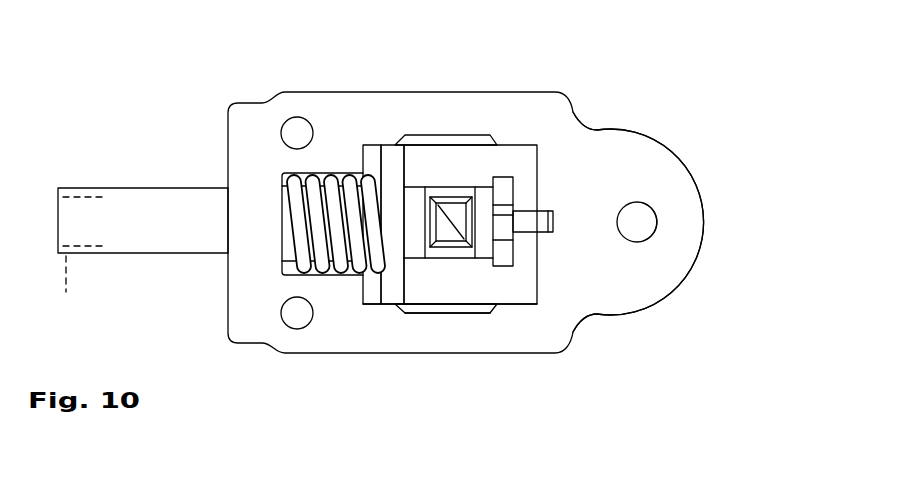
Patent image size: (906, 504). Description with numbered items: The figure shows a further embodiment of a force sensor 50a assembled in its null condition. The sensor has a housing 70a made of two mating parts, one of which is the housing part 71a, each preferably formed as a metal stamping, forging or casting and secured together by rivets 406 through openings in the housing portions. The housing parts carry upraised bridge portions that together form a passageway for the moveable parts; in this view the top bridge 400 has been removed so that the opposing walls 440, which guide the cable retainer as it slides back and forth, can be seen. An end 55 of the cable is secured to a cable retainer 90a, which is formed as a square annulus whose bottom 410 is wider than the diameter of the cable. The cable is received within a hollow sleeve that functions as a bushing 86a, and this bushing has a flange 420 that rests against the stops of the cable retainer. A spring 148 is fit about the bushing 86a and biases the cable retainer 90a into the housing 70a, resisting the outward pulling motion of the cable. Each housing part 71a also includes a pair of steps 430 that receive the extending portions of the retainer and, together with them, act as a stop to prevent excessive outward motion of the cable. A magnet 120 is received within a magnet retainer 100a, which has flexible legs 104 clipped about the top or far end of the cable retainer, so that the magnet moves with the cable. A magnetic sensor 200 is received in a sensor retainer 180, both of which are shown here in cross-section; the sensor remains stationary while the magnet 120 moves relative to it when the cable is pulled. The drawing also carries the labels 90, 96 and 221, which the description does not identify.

The force sensor 50a is at (214, 122).
The actuator rod 90 is at (97, 187).
The rod end 96 is at (65, 287).
The bushing 86a is at (288, 243).
The spring 148 is at (338, 263).
The rivets 406 is at (307, 116).
The steps 430 is at (362, 166).
The flange 420 is at (388, 146).
The end of cable 55 is at (368, 255).
The upraised bridge portion 400 is at (443, 143).
The bottom of the retainer 410 is at (393, 285).
The housing bottom right portion 221 is at (488, 298).
The opposing walls 440 is at (513, 137).
The cable retainer 90a is at (516, 325).
The sensor retainer 180 is at (453, 252).
The magnetic sensor 200 is at (445, 228).
The magnet retainer 100a is at (501, 257).
The magnet 120 is at (500, 226).
The flexible legs 104 is at (527, 213).
The housing 70a is at (549, 116).
The housing part 71a is at (587, 148).